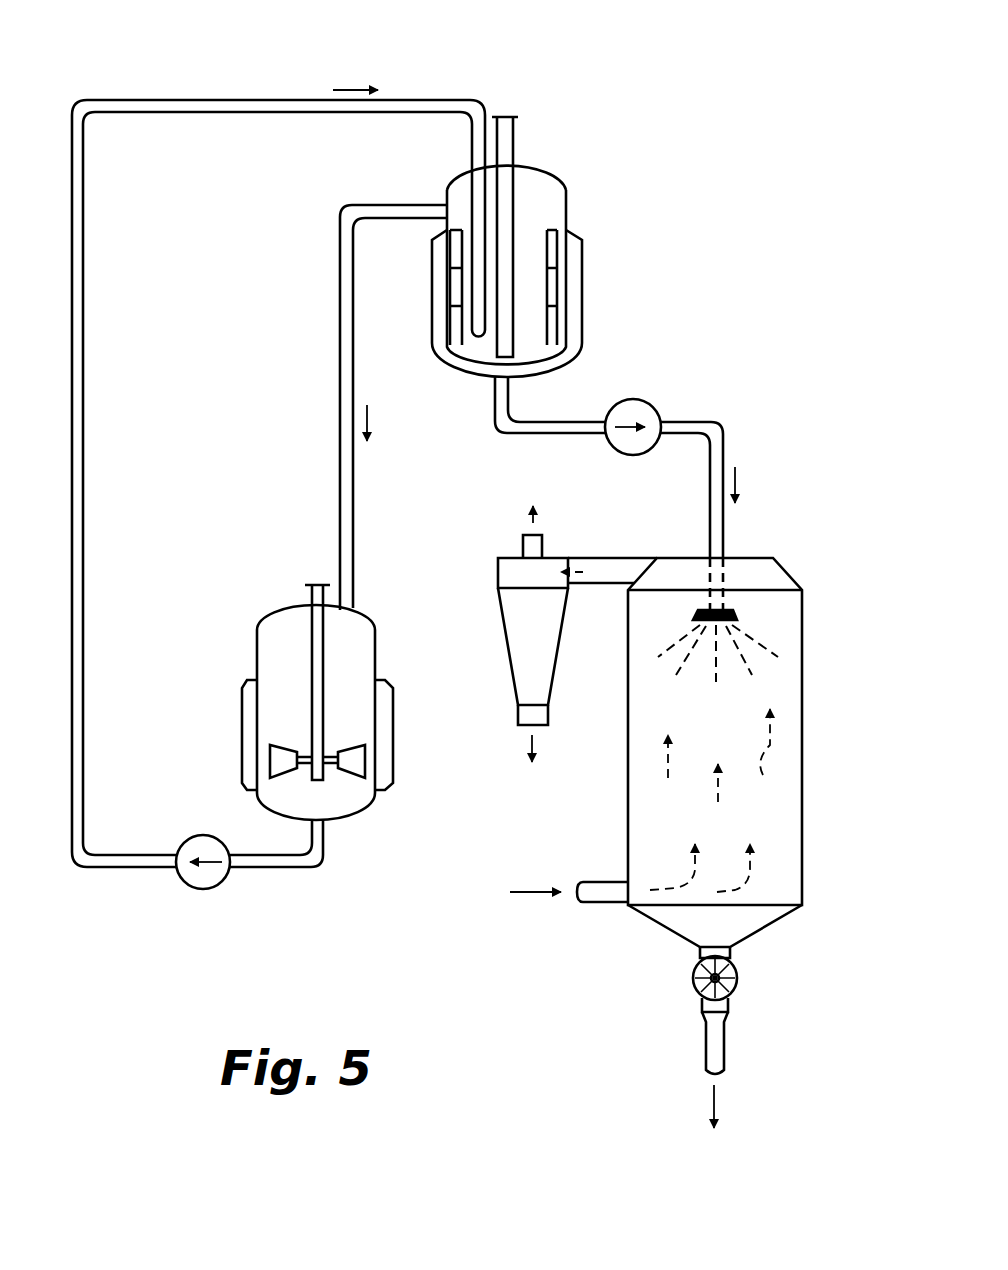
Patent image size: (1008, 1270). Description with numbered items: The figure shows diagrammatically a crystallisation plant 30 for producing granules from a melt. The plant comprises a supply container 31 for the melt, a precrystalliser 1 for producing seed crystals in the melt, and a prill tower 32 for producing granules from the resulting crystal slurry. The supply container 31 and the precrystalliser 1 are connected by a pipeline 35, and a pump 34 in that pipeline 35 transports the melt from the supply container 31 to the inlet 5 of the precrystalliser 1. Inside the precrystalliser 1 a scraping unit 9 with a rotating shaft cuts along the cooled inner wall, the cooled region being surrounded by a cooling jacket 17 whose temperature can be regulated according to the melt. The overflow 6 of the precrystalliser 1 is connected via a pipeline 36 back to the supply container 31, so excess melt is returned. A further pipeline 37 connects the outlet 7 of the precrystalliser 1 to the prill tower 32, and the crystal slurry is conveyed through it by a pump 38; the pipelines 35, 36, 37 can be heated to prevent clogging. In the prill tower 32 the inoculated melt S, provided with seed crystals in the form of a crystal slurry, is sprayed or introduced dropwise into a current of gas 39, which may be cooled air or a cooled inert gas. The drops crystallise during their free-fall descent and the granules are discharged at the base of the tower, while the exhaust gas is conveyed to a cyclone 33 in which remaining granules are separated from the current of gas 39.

The precrystalliser 1 is at (570, 170).
The inlet 5 is at (478, 180).
The overflow 6 is at (432, 212).
The outlet opening 7 is at (503, 381).
The scraping unit 9 is at (516, 176).
The cooling jacket 17 is at (577, 287).
The crystallisation plant 30 is at (750, 263).
The supply container 31 is at (268, 640).
The prill tower 32 is at (802, 790).
The cyclone 33 is at (518, 648).
The pump 34 is at (201, 845).
The pipeline 35 is at (208, 105).
The pipeline 36 is at (345, 352).
The pipeline 37 is at (537, 425).
The pump 38 is at (632, 410).
The current of gas 39 is at (602, 572).
The inoculated melt S is at (768, 652).